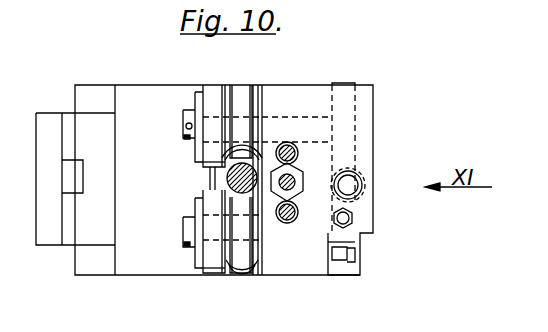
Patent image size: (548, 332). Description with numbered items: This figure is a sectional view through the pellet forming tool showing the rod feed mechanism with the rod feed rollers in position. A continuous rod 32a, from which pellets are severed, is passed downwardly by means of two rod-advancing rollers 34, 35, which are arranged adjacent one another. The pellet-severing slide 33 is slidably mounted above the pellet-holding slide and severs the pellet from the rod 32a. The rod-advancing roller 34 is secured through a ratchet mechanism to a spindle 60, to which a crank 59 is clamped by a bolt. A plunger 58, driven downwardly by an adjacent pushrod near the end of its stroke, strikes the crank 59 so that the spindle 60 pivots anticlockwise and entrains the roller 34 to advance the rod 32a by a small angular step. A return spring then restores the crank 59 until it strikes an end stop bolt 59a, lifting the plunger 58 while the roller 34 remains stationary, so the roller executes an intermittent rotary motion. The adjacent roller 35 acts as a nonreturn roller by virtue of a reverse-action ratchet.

The pellet-severing slide 33 is at (47, 153).
The rod-advancing roller 34 is at (237, 97).
The continuous rod 32a is at (228, 182).
The rod-advancing roller 35 is at (242, 276).
The spindle 60 is at (292, 127).
The crank 59 is at (347, 85).
The plunger 58 is at (350, 185).
The end stop bolt 59a is at (350, 222).